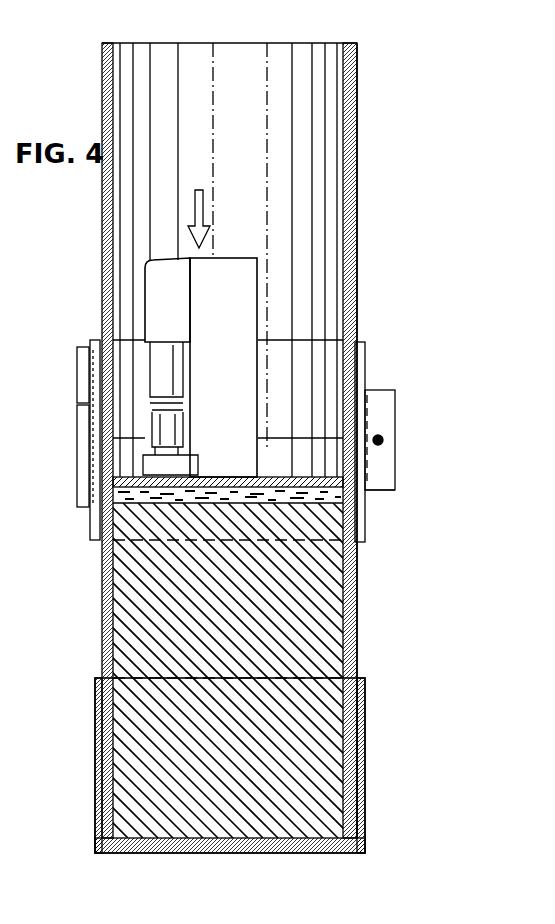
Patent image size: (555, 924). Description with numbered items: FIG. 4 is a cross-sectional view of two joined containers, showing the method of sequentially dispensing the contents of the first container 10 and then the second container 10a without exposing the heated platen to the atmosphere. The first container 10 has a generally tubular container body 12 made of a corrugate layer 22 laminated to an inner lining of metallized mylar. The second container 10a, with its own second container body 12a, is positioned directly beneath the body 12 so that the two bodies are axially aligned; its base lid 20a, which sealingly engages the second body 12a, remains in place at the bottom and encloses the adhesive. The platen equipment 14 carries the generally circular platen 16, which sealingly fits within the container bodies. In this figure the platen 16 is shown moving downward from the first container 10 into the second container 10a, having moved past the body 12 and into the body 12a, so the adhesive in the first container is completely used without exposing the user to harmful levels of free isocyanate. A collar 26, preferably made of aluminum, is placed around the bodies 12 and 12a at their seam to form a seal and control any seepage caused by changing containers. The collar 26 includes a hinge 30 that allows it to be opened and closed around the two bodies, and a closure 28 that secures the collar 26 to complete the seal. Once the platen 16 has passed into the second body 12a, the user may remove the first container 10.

The container 10 is at (371, 74).
The container body 12 is at (357, 180).
The corrugate layer 22 is at (357, 240).
The platen equipment 14 is at (229, 268).
The platen 16 is at (106, 504).
The collar 26 is at (366, 352).
The closure 28 is at (375, 490).
The hinge 30 is at (77, 378).
The second container 10a is at (88, 608).
The second container body 12a is at (357, 618).
The base lid 20a is at (364, 771).